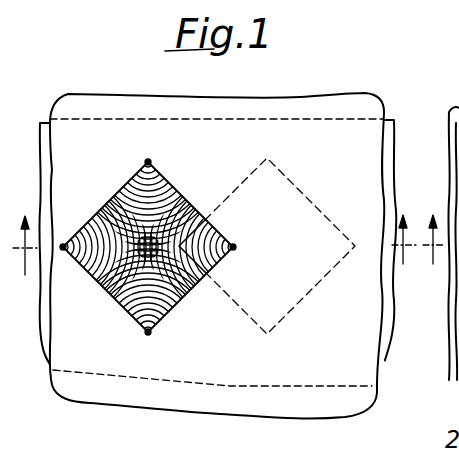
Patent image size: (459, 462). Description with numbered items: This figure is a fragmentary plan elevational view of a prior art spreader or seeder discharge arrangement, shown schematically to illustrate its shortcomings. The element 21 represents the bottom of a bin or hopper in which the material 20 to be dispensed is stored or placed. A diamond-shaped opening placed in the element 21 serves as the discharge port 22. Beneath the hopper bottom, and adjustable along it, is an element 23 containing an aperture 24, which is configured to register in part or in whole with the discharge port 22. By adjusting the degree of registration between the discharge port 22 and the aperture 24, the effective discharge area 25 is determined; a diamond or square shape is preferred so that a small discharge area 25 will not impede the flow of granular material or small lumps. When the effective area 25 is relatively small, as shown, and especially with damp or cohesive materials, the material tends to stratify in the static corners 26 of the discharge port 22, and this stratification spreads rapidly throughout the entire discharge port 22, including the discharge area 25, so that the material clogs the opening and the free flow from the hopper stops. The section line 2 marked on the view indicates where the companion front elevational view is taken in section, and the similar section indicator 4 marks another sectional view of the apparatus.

The material 20 is at (110, 293).
The bottom of a bin or hopper 21 is at (358, 105).
The discharge port 22 is at (183, 202).
The element 23 is at (382, 355).
The aperture 24 is at (305, 204).
The effective discharge area 25 is at (220, 233).
The static corners 26 is at (149, 162).
The section line 2 is at (219, 266).
The section line 4- 4 is at (437, 260).